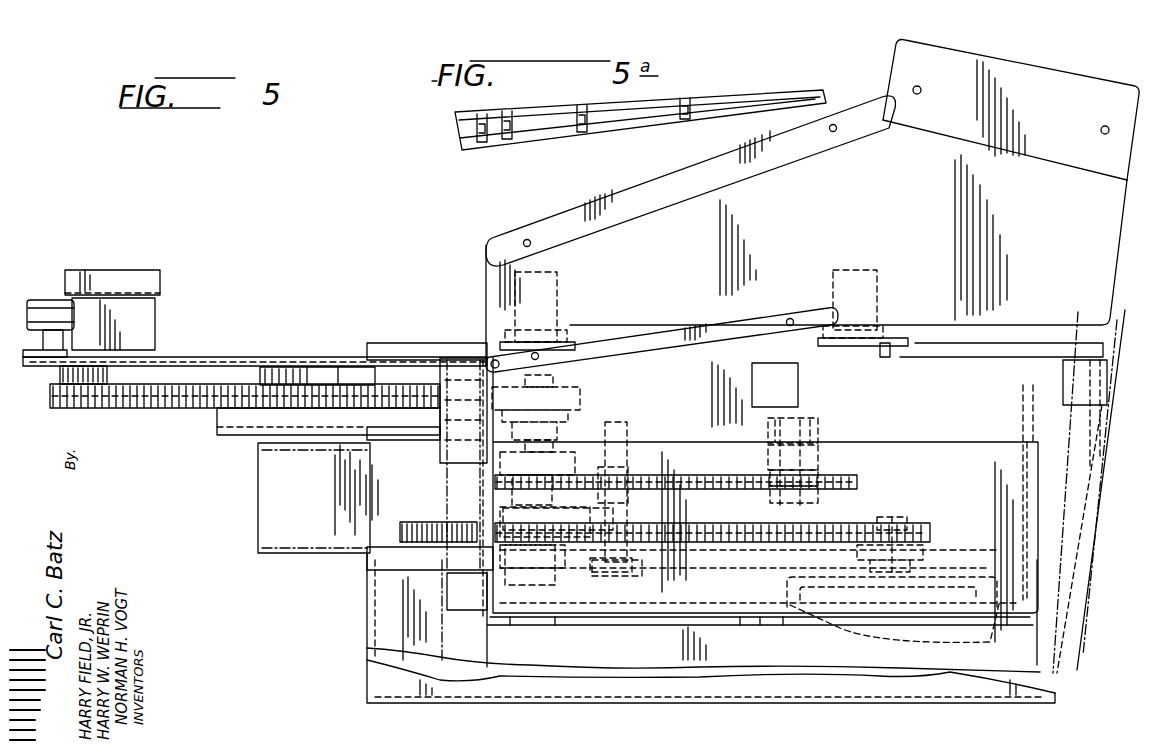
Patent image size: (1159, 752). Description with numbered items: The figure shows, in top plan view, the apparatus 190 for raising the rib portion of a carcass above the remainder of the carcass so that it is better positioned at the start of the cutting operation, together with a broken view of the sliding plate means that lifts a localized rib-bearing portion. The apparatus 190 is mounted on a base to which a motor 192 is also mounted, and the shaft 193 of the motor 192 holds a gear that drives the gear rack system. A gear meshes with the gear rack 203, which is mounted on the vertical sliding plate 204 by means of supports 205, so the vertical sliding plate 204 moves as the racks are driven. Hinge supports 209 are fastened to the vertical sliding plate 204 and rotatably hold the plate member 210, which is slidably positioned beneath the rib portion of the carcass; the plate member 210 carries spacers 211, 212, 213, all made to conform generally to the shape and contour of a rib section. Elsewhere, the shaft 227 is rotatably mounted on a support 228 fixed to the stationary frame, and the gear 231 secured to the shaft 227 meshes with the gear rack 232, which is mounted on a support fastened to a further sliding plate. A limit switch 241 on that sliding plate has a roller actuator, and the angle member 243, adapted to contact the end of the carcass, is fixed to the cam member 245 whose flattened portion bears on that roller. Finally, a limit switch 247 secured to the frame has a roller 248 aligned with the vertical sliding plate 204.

In FIG. 5, the apparatus 190 is at (395, 326).
In FIG. 5, the motor 192 is at (930, 565).
In FIG. 5, the shaft 193 is at (900, 522).
In FIG. 5, the gear rack 203 is at (192, 400).
In FIG. 5, the vertical sliding plate 204 is at (265, 357).
In FIG. 5, the supports 205 is at (95, 380).
In FIG. 5, the hinge supports 209 is at (573, 337).
In FIG. 5a, the plate member 210 is at (558, 130).
In FIG. 5, the plate member 210 is at (909, 213).
In FIG. 5a, the spacer 211 is at (628, 108).
In FIG. 5, the spacer 211 is at (677, 333).
In FIG. 5, the spacer 212 is at (664, 183).
In FIG. 5, the spacer 213 is at (1053, 80).
In FIG. 5, the shaft 227 is at (822, 415).
In FIG. 5, the support 228 is at (822, 452).
In FIG. 5, the gear 231 is at (822, 470).
In FIG. 5, the gear rack 232 is at (857, 482).
In FIG. 5, the limit switch 241 is at (527, 573).
In FIG. 5, the angle member 243 is at (613, 422).
In FIG. 5, the cam member 245 is at (607, 580).
In FIG. 5, the limit switch 247 is at (143, 327).
In FIG. 5, the roller 248 is at (53, 312).